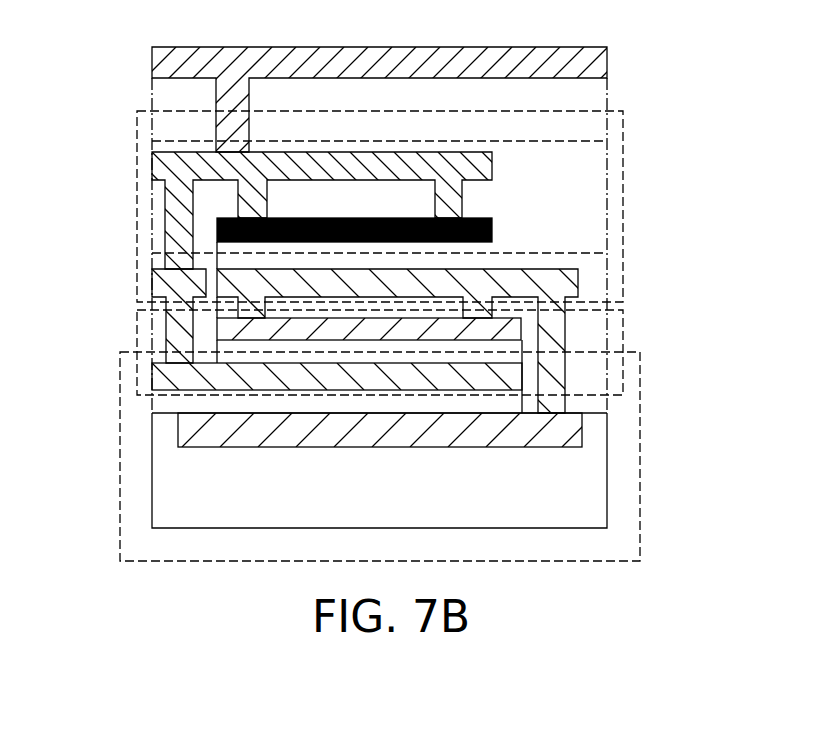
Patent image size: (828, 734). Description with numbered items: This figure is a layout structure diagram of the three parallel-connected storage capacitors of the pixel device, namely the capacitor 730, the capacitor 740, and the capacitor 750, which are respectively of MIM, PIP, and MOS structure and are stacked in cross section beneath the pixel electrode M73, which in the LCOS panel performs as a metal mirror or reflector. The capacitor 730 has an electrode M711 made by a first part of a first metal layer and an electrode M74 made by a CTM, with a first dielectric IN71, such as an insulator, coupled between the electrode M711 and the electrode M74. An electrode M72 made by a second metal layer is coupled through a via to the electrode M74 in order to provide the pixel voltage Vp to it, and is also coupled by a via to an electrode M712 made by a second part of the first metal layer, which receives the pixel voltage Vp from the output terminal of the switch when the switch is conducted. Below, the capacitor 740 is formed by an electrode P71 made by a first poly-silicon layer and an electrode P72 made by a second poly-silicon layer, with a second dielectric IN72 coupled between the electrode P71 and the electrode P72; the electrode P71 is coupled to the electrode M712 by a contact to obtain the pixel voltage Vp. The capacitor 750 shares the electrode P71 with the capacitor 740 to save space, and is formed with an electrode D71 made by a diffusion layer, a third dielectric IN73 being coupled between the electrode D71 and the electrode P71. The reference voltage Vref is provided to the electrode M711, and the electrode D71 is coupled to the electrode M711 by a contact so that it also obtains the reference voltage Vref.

The pixel electrode M73 is at (608, 63).
The capacitor 730 is at (625, 155).
The electrode M72 is at (150, 165).
The electrode M74 is at (492, 228).
The first dielectric IN71 is at (492, 259).
The electrode M712 is at (152, 278).
The electrode M711 is at (578, 283).
The second dielectric IN72 is at (217, 342).
The electrode P72 is at (521, 328).
The electrode P71 is at (152, 366).
The capacitor 740 is at (623, 382).
The third dielectric IN73 is at (152, 407).
The electrode D71 is at (178, 429).
The capacitor 750 is at (640, 507).